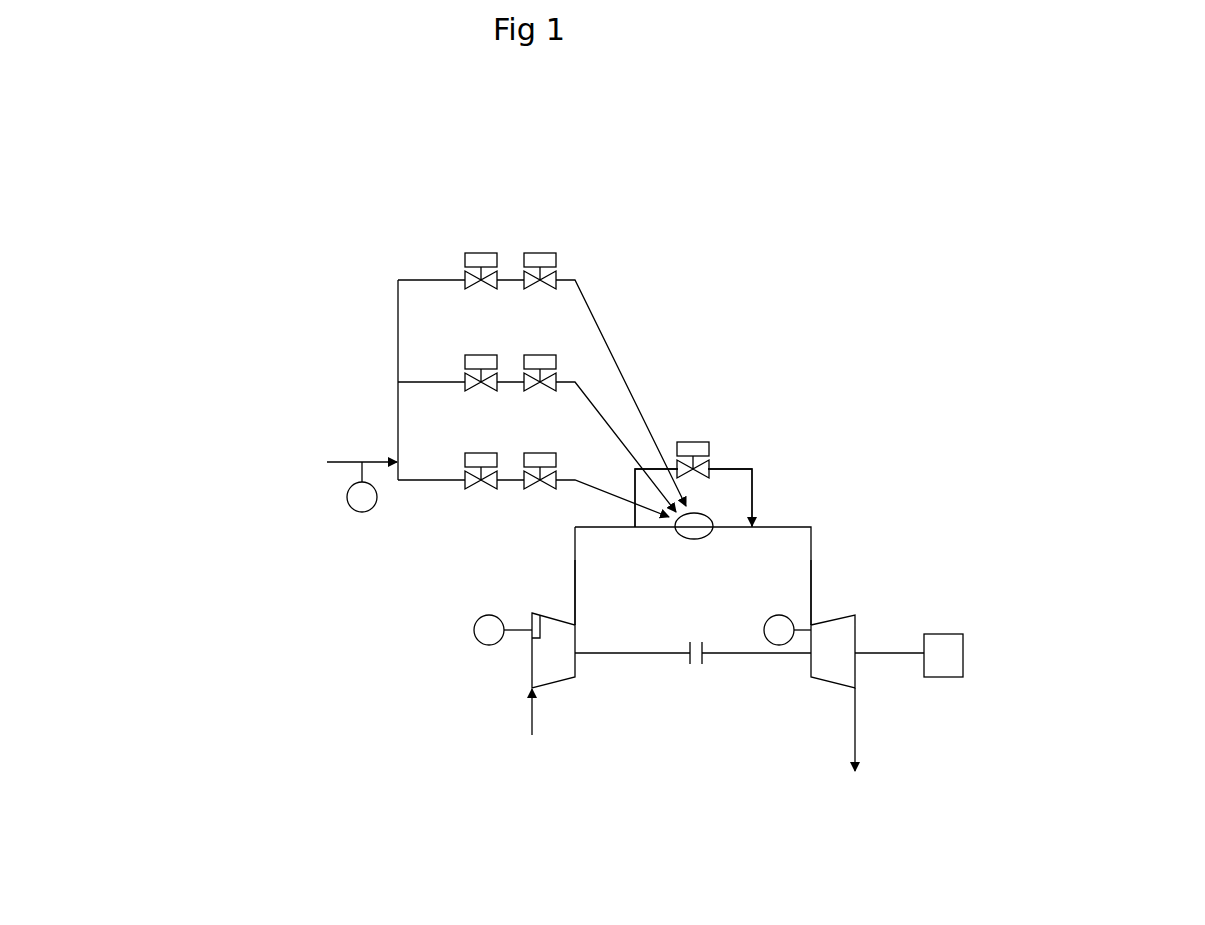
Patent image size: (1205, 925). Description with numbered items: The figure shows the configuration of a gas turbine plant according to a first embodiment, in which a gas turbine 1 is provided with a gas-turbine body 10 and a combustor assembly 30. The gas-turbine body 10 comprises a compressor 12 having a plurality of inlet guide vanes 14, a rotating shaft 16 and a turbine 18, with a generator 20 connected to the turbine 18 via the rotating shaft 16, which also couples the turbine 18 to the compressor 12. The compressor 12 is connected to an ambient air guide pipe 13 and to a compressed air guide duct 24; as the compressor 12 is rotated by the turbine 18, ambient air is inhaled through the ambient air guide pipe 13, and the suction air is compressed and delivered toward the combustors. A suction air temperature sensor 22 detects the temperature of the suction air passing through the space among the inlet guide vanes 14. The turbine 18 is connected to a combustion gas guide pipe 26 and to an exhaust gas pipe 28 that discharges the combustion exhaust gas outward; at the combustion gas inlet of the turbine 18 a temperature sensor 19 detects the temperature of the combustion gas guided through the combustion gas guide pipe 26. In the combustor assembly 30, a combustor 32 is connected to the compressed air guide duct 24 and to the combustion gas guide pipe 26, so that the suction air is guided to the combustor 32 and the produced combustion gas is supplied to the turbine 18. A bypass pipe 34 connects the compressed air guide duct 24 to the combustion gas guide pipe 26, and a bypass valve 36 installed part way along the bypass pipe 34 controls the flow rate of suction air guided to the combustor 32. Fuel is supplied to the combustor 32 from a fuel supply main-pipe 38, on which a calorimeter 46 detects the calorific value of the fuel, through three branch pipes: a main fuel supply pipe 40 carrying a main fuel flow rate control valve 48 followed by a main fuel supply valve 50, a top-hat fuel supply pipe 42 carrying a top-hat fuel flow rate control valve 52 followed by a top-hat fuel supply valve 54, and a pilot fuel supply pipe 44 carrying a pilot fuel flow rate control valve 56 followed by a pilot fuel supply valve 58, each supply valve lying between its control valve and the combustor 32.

The gas turbine 1 is at (900, 243).
The gas-turbine body 10 is at (704, 762).
The compressor 12 is at (550, 688).
The ambient air guide pipe 13 is at (531, 740).
The inlet guide vanes 14 is at (532, 635).
The rotating shaft 16 is at (752, 655).
The turbine 18 is at (855, 675).
The temperature sensor 19 is at (775, 615).
The generator 20 is at (941, 634).
The suction air temperature sensor 22 is at (474, 630).
The compressed air guide duct 24 is at (575, 588).
The combustion gas guide pipe 26 is at (811, 550).
The exhaust gas pipe 28 is at (855, 738).
The combustor assembly 30 is at (905, 392).
The combustor 32 is at (690, 541).
The bypass pipe 34 is at (752, 485).
The bypass valve 36 is at (700, 441).
The fuel supply main-pipe 38 is at (373, 462).
The main fuel supply pipe 40 is at (398, 280).
The top-hat fuel supply pipe 42 is at (418, 382).
The pilot fuel supply pipe 44 is at (418, 480).
The calorimeter 46 is at (347, 497).
The main fuel flow rate control valve 48 is at (481, 253).
The main fuel supply valve 50 is at (543, 253).
The top-hat fuel flow rate control valve 52 is at (478, 353).
The top-hat fuel supply valve 54 is at (540, 353).
The pilot fuel flow rate control valve 56 is at (478, 453).
The pilot fuel supply valve 58 is at (546, 486).